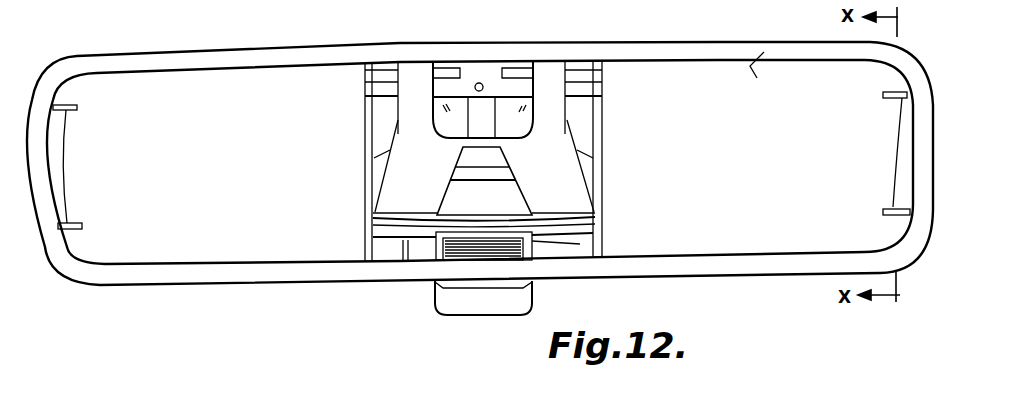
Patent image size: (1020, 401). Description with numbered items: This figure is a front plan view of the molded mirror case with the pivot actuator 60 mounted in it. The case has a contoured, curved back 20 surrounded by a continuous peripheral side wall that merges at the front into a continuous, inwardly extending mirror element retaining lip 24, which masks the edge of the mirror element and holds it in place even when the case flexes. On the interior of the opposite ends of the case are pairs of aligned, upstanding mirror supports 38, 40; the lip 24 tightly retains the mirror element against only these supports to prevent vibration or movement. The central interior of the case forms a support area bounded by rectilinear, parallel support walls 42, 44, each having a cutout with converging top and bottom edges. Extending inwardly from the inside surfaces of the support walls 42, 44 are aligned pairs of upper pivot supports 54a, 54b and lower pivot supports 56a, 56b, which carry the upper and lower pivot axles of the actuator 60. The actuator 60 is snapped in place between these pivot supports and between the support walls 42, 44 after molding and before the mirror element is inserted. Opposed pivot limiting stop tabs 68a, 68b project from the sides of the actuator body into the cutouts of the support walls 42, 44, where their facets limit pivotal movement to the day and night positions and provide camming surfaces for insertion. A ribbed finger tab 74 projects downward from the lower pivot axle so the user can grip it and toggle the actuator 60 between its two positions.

The case back 20 is at (778, 181).
The mirror element retaining lip 24 is at (766, 71).
The upstanding mirror support 38 is at (65, 147).
The upstanding mirror support 40 is at (895, 142).
The support wall 42 is at (367, 200).
The support wall 44 is at (605, 200).
The upper pivot support 54a is at (383, 85).
The upper pivot support 54b is at (580, 83).
The lower pivot support 56a is at (380, 240).
The lower pivot support 56b is at (582, 247).
The pivot actuator 60 is at (548, 130).
The pivot limiting stop tab 68a is at (587, 163).
The pivot limiting stop tab 68b is at (380, 170).
The finger tab 74 is at (513, 300).